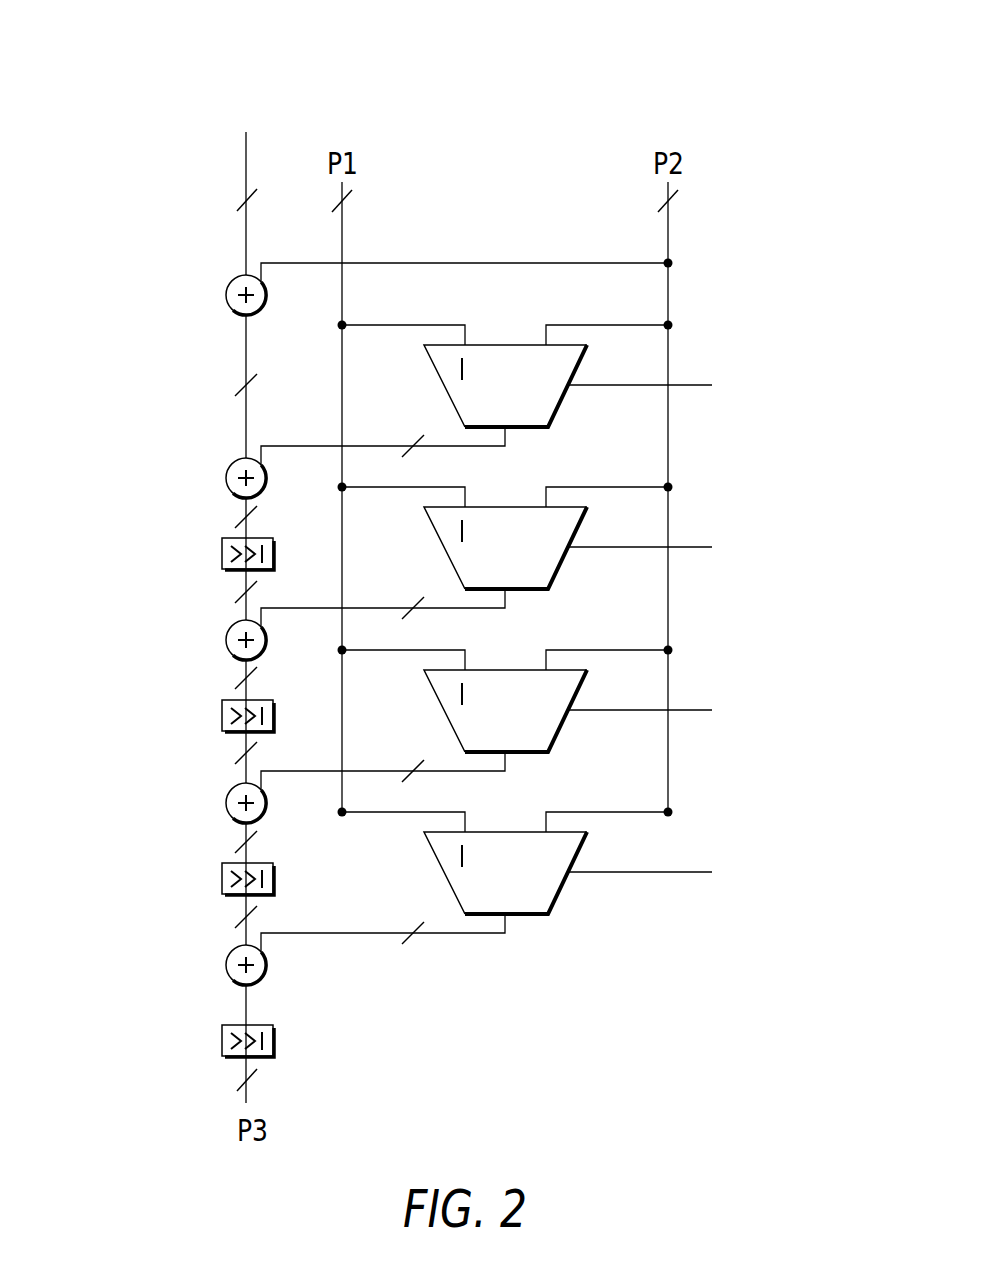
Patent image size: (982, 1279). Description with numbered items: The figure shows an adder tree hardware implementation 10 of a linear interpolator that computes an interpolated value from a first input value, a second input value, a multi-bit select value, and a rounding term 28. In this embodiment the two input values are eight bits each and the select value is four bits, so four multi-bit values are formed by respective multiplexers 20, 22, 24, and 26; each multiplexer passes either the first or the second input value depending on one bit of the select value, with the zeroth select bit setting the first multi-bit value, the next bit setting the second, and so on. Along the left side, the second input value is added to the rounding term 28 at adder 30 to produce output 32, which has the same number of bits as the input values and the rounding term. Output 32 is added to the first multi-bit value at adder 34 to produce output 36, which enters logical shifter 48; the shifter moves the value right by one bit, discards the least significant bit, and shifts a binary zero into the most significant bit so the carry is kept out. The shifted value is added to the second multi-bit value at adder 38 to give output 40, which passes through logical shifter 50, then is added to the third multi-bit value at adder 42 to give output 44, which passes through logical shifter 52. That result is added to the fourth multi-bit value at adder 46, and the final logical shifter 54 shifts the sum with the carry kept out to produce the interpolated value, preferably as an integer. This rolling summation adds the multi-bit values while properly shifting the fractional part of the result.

The adder tree hardware implementation 10 is at (122, 138).
The multiplexer 20 is at (586, 366).
The multiplexer 22 is at (586, 528).
The multiplexer 24 is at (586, 691).
The multiplexer 26 is at (586, 852).
The rounding term 28 is at (238, 62).
The adder 30 is at (226, 296).
The output 32 is at (245, 337).
The adder 34 is at (226, 478).
The output 36 is at (242, 506).
The adder 38 is at (226, 640).
The output 40 is at (243, 667).
The adder 42 is at (226, 804).
The output 44 is at (243, 838).
The adder 46 is at (226, 967).
The logical shifter 48 is at (222, 556).
The logical shifter 50 is at (222, 718).
The logical shifter 52 is at (222, 878).
The logical shifter 54 is at (222, 1045).